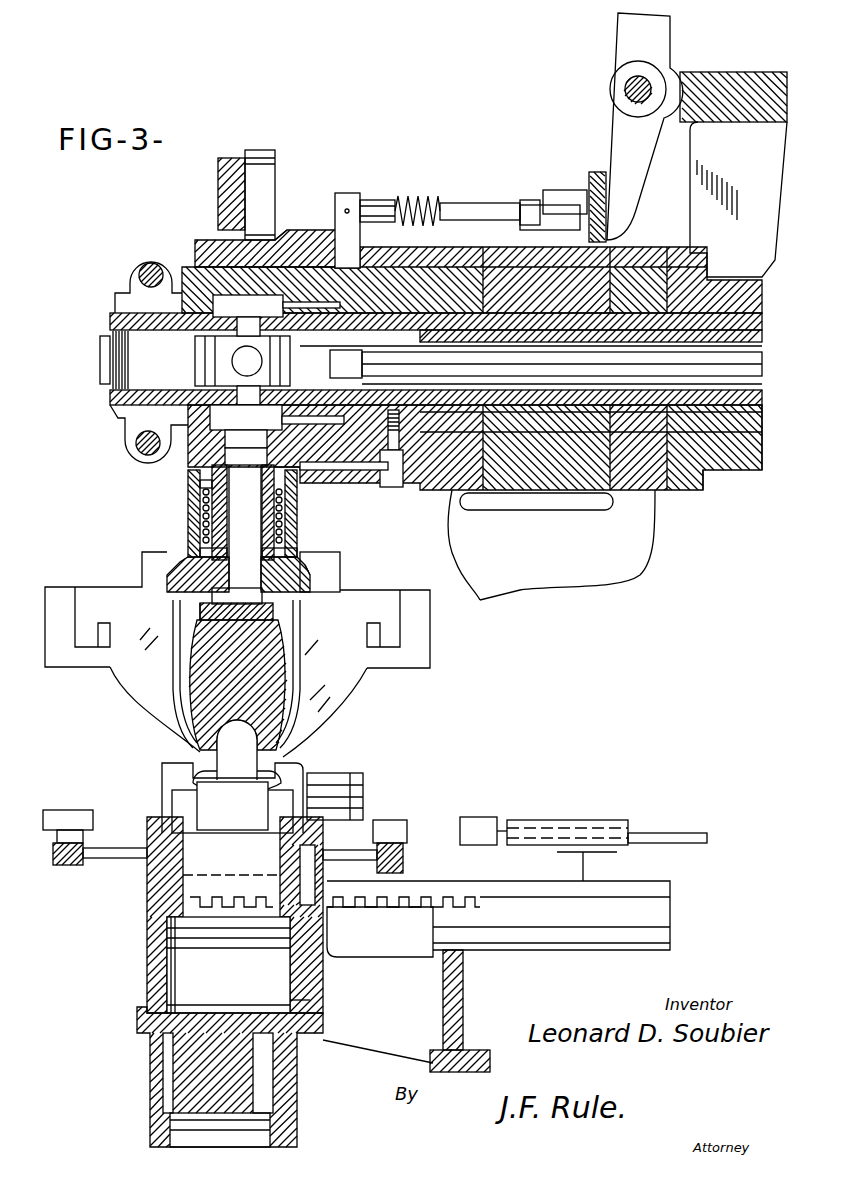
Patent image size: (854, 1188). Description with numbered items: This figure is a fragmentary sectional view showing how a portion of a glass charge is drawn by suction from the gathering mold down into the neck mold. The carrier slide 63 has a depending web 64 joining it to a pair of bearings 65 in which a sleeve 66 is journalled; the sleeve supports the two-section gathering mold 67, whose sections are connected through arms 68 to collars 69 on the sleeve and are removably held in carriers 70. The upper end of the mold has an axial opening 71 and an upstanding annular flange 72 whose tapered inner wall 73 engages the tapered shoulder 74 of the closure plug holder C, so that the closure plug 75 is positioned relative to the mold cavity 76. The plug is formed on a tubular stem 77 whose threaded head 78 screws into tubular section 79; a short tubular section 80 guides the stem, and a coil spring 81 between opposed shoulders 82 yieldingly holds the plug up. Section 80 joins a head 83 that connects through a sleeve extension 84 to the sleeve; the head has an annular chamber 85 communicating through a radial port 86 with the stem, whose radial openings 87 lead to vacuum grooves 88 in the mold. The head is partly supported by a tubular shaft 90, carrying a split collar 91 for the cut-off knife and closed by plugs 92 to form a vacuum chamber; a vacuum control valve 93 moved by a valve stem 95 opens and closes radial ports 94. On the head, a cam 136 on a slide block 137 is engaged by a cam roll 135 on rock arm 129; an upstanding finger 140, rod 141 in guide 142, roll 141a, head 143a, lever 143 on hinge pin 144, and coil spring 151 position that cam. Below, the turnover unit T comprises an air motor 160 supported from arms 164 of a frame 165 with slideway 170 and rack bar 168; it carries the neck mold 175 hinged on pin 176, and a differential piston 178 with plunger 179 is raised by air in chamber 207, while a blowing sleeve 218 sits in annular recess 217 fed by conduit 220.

The slide 63 is at (748, 72).
The depending web 64 is at (700, 230).
The bearings 65 is at (698, 490).
The sleeve 66 is at (733, 465).
The gathering mold 67 is at (350, 690).
The arms 68 is at (575, 605).
The collars 69 is at (452, 510).
The carriers 70 is at (45, 640).
The axial opening 71 is at (275, 610).
The annular flange 72 is at (340, 568).
The inner wall 73 is at (312, 560).
The shoulder 74 is at (306, 582).
The closure plug 75 is at (200, 608).
The mold cavity 76 is at (273, 710).
The tubular stem 77 is at (275, 508).
The externally threaded head 78 is at (282, 552).
The tubular section 79 is at (190, 540).
The short tubular section 80 is at (276, 474).
The coil spring 81 is at (203, 512).
The shoulders 82 is at (200, 487).
The head 83 is at (302, 468).
The sleeve extension 84 is at (362, 462).
The annular chamber 85 is at (229, 426).
The radial port 86 is at (238, 448).
The radial openings 87 is at (247, 590).
The vacuum grooves 88 is at (300, 648).
The tubular shaft 90 is at (714, 338).
The split collar 91 is at (125, 420).
The plugs 92 is at (100, 360).
The vacuum control valve 93 is at (300, 348).
The radial ports 94 is at (248, 328).
The valve stem 95 is at (686, 368).
The rock arm 129 is at (218, 212).
The cam roll 135 is at (275, 166).
The cam 136 is at (305, 232).
The slide block 137 is at (200, 247).
The upstanding finger 140 is at (347, 193).
The rod 141 is at (378, 200).
The roll 141a is at (563, 190).
The guide or bearing 142 is at (422, 198).
The lever 143 is at (612, 125).
The head 143a is at (597, 172).
The hinge pin 144 is at (626, 87).
The coil spring 151 is at (468, 203).
The air motor 160 is at (138, 934).
The arms 164 is at (388, 968).
The frame 165 is at (463, 1010).
The rack bar 168 is at (378, 898).
The slideway 170 is at (562, 938).
The neck mold 175 is at (292, 773).
The hinge pin 176 is at (348, 781).
The differential piston 178 is at (232, 952).
The plunger 179 is at (225, 755).
The chamber 207 is at (150, 1012).
The annular recess 217 is at (150, 1030).
The blowing sleeve 218 is at (295, 1098).
The conduit 220 is at (310, 1001).
The closure plug holder C is at (179, 486).
The turnover unit T is at (225, 849).